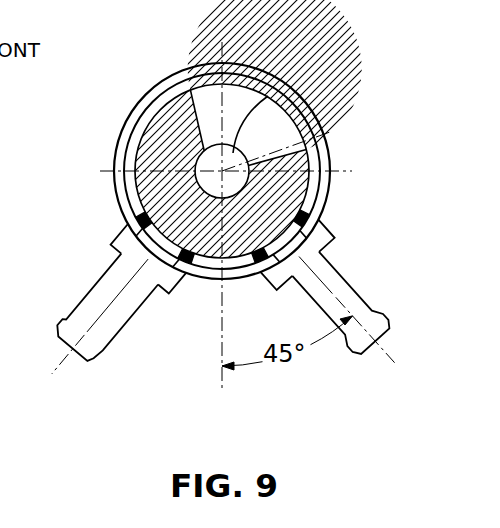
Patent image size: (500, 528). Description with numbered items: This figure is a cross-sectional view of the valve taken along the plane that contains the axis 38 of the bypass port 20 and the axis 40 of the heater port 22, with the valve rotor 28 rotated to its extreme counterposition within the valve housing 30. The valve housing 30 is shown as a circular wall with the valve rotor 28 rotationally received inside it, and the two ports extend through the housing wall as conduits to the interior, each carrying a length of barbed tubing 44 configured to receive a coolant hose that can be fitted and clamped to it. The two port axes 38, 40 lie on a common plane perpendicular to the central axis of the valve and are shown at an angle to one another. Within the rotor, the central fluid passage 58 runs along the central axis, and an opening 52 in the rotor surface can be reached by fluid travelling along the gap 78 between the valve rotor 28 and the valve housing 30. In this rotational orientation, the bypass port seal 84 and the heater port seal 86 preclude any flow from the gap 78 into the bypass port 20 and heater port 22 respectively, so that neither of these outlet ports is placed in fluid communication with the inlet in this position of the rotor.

The bypass port 20 is at (395, 342).
The heater port 22 is at (83, 361).
The valve rotor 28 is at (195, 278).
The valve housing 30 is at (236, 277).
The axis of the bypass port 38 is at (380, 366).
The axis of the heater port 40 is at (52, 378).
The barbed tubing 44 is at (346, 268).
The opening 52 is at (240, 93).
The central fluid passage 58 is at (270, 96).
The gap 78 is at (320, 170).
The bypass port seal 84 is at (325, 200).
The heater port seal 86 is at (118, 203).